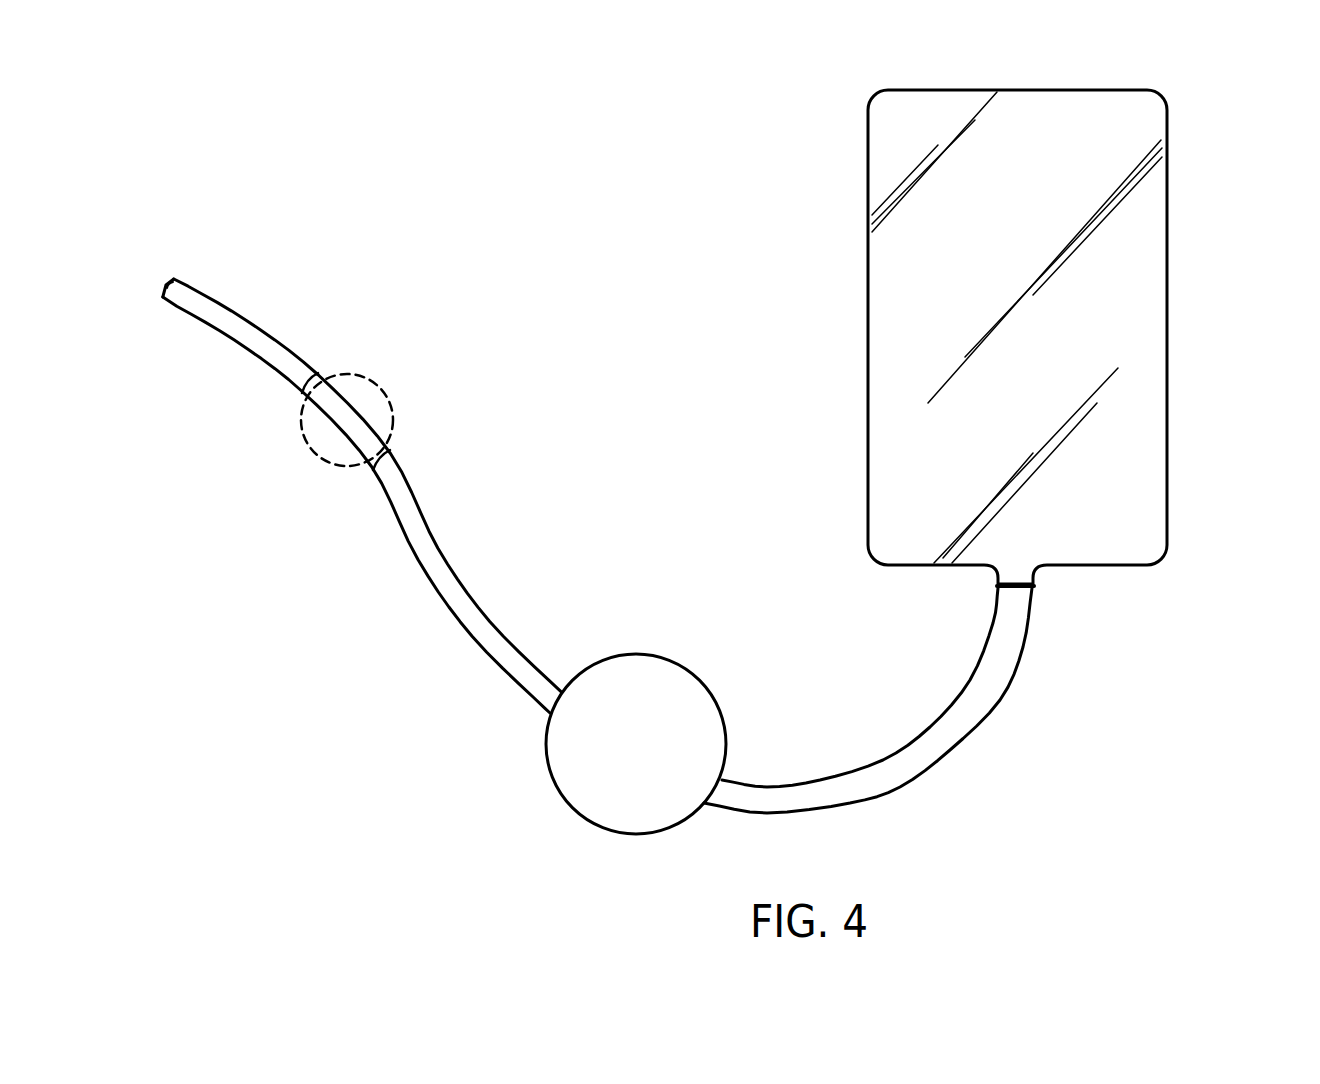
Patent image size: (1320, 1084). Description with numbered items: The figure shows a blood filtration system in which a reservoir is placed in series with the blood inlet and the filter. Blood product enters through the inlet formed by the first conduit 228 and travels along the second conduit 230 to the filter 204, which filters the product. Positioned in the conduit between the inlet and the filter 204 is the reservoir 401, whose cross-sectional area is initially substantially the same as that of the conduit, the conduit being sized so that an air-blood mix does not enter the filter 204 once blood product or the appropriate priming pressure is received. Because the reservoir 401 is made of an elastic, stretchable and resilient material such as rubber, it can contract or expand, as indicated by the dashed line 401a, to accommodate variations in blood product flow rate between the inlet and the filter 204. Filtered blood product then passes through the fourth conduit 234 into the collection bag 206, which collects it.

The first conduit 228 is at (222, 307).
The second conduit 230 is at (470, 603).
The reservoir 401 is at (377, 434).
The line 401a is at (373, 387).
The filter 204 is at (620, 835).
The fourth conduit 234 is at (922, 768).
The collection bag 206 is at (1165, 497).